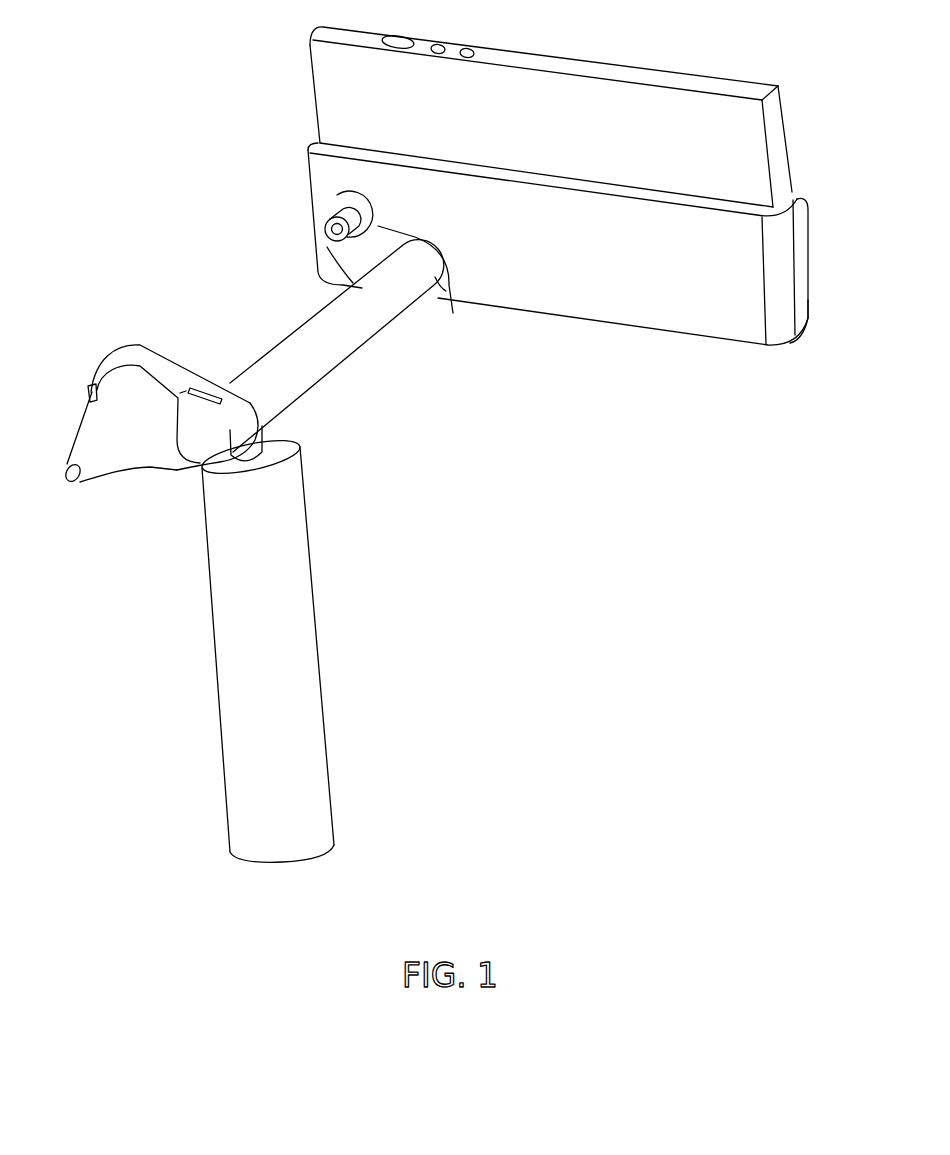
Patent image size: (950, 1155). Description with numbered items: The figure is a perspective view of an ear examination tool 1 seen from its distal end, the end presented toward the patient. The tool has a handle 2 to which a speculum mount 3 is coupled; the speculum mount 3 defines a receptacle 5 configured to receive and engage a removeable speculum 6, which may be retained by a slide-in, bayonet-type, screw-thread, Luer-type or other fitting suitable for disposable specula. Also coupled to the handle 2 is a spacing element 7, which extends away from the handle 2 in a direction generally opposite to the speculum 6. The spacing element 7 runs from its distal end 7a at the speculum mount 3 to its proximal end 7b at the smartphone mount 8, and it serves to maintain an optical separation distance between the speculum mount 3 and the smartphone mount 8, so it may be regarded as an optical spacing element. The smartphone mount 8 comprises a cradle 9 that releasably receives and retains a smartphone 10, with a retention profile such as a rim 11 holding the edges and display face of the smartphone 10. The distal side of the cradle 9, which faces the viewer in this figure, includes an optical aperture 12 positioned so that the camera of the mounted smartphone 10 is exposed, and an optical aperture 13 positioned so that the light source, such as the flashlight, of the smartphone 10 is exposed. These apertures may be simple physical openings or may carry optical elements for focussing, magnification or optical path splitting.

The ear examination tool 1 is at (118, 272).
The handle 2 is at (208, 630).
The speculum mount 3 is at (120, 358).
The receptacle 5 is at (90, 398).
The speculum 6 is at (105, 455).
The spacing element 7 is at (345, 345).
The distal end of spacing element 7a is at (250, 415).
The proximal end of spacing element 7b is at (447, 293).
The smartphone mount 8 is at (694, 312).
The cradle 9 is at (800, 198).
The smartphone 10 is at (698, 103).
The rim 11 is at (812, 323).
The optical aperture 12 is at (343, 250).
The optical aperture 13 is at (327, 221).